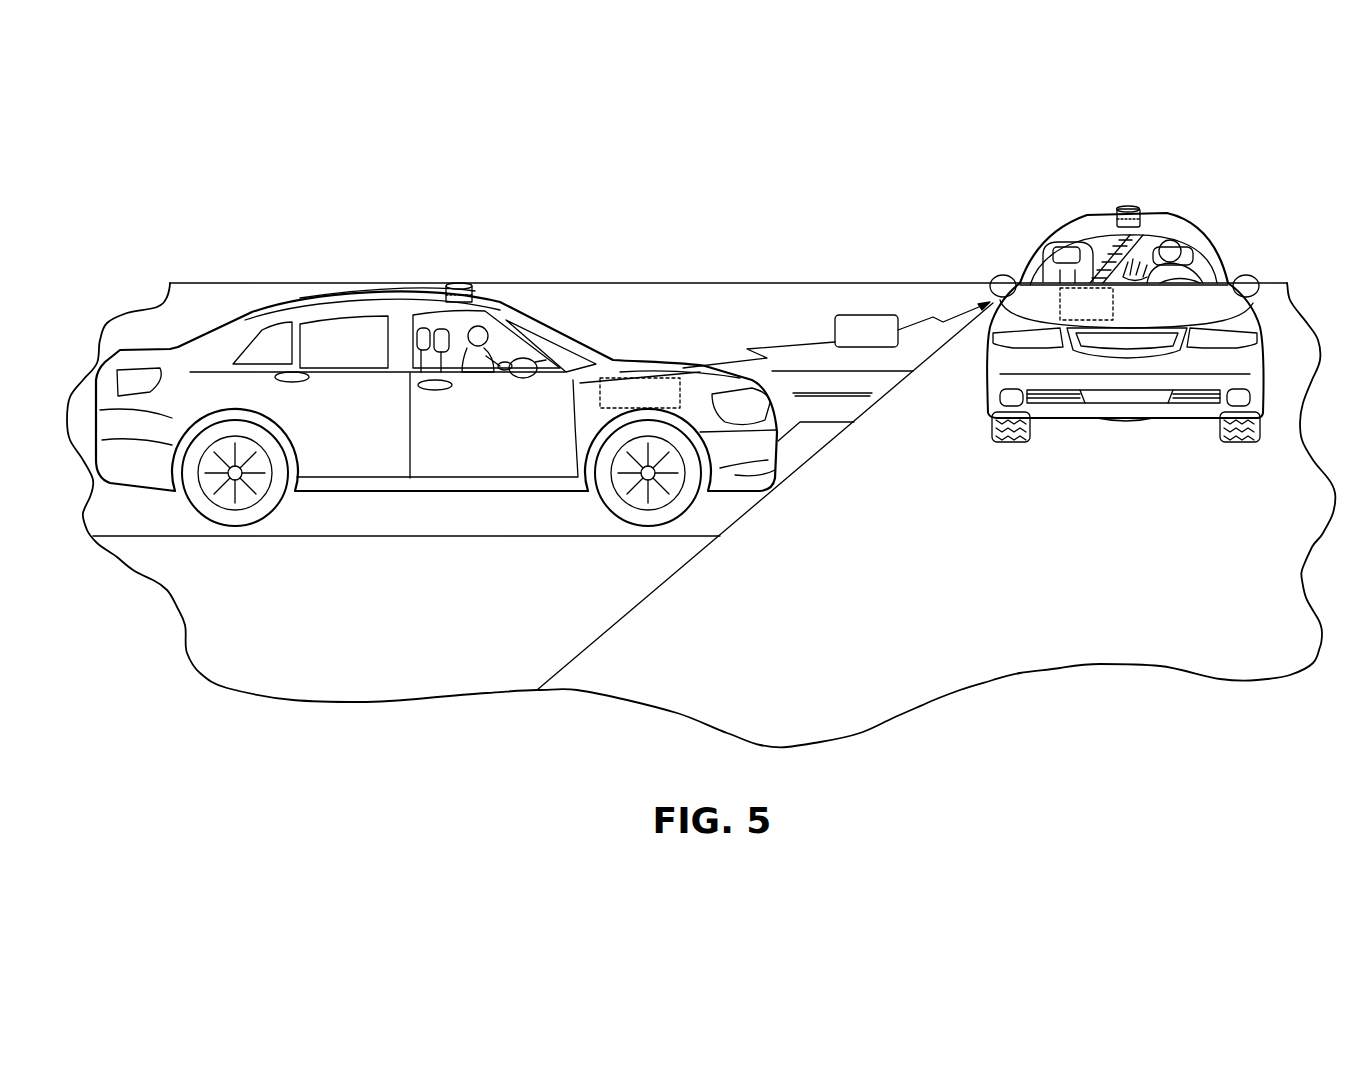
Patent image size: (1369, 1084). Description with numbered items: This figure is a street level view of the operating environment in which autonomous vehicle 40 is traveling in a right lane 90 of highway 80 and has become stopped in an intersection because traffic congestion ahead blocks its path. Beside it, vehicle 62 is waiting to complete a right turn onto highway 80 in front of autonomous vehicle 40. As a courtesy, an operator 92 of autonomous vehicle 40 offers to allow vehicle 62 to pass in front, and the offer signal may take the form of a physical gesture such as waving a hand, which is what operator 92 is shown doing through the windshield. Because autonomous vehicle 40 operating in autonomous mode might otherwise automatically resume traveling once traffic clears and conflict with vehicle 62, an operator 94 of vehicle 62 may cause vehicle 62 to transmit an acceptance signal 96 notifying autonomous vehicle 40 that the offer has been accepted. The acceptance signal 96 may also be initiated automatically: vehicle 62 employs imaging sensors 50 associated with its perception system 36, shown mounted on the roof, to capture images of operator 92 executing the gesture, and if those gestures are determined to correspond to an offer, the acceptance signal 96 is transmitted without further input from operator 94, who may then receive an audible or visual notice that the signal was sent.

The perception system 36 is at (451, 284).
The autonomous vehicle 40 is at (1180, 218).
The imaging sensors 50 is at (472, 293).
The vehicle 62 is at (350, 290).
The highway 80 is at (423, 526).
The right lane 90 is at (902, 673).
The operator 92 is at (1200, 275).
The operator 94 is at (503, 366).
The acceptance signal 96 is at (880, 315).